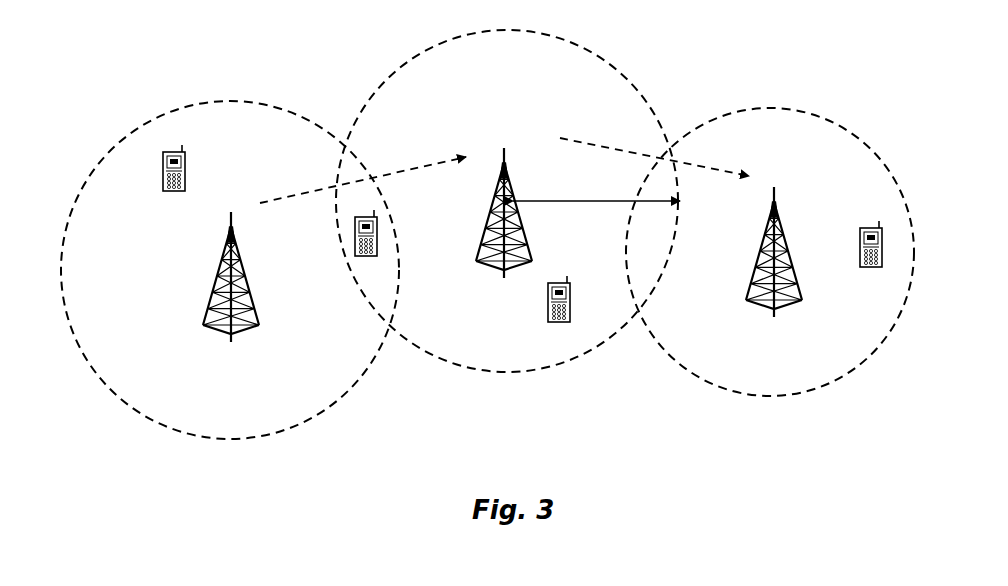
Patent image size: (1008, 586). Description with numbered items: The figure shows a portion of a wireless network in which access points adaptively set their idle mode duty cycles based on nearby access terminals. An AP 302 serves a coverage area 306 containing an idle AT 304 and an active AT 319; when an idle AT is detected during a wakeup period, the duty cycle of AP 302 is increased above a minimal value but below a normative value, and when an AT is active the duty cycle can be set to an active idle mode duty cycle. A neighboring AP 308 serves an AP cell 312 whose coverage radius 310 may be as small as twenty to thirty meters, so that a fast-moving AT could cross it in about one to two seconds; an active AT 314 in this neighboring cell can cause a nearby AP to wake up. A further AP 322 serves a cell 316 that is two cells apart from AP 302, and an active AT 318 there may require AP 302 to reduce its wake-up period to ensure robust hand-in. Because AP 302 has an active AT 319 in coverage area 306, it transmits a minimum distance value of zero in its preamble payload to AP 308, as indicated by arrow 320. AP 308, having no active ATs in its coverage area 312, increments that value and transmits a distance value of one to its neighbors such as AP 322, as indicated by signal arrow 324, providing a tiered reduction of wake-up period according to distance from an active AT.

The AP 302 is at (234, 240).
The idle AT 304 is at (355, 246).
The coverage area 306 is at (273, 105).
The AP 308 is at (507, 166).
The coverage radius 310 is at (578, 200).
The AP cell 312 is at (615, 69).
The active AT 314 is at (548, 309).
The cell 316 is at (805, 111).
The AT 318 is at (860, 258).
The active AT 319 is at (163, 178).
The arrow 320 is at (402, 171).
The AP 322 is at (777, 216).
The signal arrow 324 is at (720, 172).